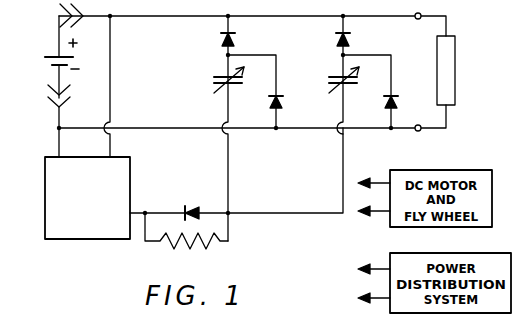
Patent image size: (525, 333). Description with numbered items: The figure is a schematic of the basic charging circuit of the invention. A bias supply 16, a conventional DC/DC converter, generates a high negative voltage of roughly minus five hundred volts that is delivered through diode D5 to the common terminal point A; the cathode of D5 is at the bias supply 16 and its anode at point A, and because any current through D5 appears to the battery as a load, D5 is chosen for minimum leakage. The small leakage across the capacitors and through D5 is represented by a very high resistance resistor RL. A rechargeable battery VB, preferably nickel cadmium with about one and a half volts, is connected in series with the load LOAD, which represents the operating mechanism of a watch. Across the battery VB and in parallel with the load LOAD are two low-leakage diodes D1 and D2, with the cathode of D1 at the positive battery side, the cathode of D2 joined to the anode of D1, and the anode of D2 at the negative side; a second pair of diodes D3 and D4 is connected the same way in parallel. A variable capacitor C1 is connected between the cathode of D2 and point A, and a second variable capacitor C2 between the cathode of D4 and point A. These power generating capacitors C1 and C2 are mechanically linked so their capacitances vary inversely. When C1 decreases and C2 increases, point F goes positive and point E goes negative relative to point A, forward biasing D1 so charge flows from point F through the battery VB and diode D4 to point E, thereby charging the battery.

The bias supply 16 is at (92, 235).
The rechargeable battery VB is at (55, 80).
The diode D1 is at (240, 42).
The diode D2 is at (266, 91).
The diode D3 is at (355, 42).
The diode D4 is at (382, 91).
The diode D5 is at (189, 199).
The variable capacitor C1 is at (218, 82).
The variable capacitor C2 is at (329, 82).
The point F is at (226, 55).
The point E is at (341, 55).
The common terminal point A is at (296, 213).
The resistor RL is at (186, 242).
The load LOAD is at (448, 55).